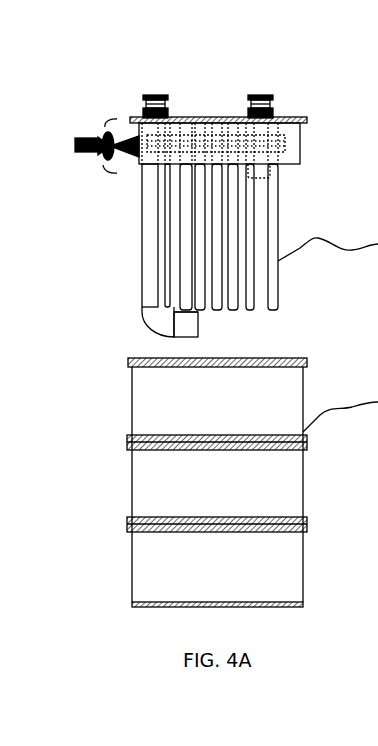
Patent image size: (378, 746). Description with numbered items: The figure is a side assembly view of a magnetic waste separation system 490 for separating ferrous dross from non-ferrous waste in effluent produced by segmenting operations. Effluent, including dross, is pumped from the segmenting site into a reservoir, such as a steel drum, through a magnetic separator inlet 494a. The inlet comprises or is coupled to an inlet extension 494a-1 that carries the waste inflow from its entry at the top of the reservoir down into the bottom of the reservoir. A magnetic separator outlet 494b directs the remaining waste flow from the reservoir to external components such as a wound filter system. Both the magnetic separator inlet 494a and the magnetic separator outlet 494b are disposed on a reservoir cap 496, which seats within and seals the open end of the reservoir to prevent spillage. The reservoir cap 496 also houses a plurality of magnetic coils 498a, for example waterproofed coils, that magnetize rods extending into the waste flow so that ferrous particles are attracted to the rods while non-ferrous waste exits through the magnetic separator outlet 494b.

The magnetic waste separation system 490 is at (173, 62).
The magnetic separator inlet 494a is at (143, 99).
The magnetic separator outlet 494b is at (276, 97).
The inlet extension 494a-1 is at (142, 277).
The reservoir cap 496 is at (300, 143).
The magnetic coils 498a is at (86, 146).